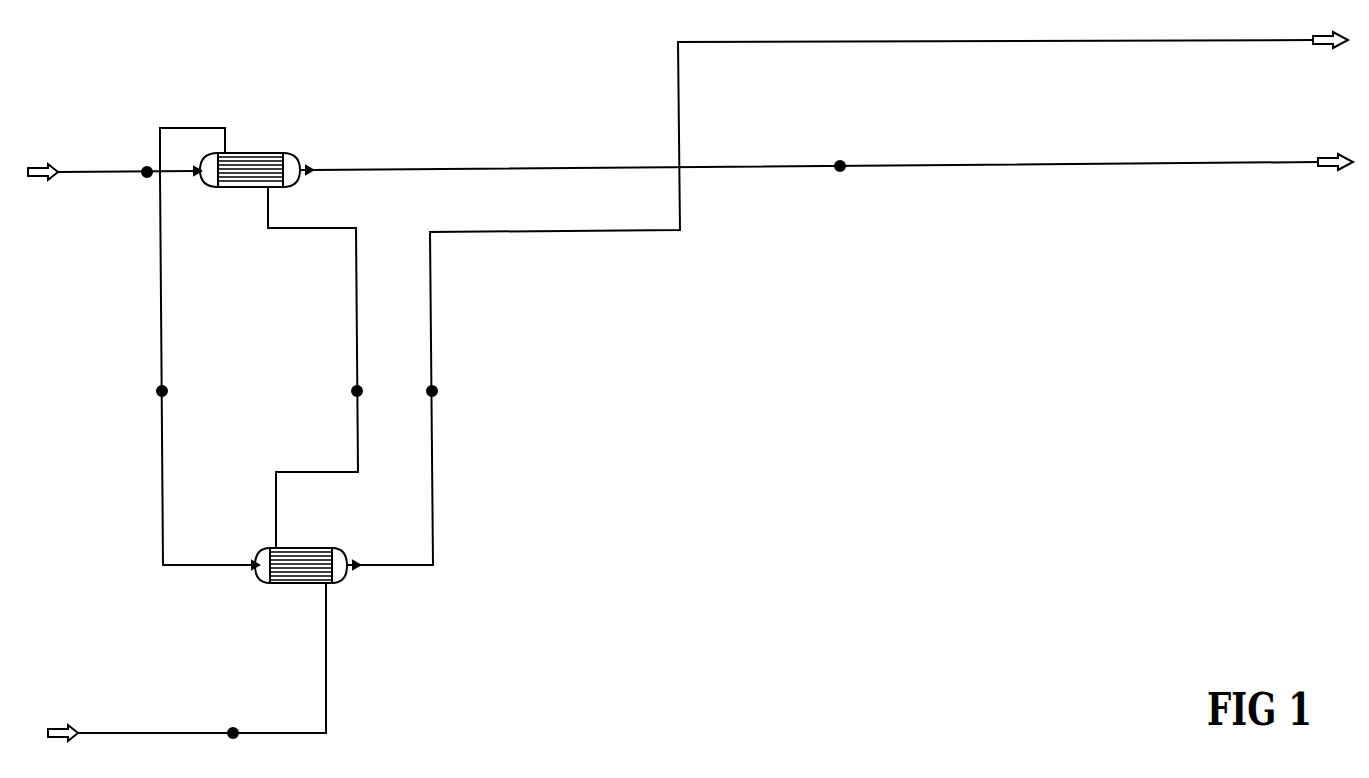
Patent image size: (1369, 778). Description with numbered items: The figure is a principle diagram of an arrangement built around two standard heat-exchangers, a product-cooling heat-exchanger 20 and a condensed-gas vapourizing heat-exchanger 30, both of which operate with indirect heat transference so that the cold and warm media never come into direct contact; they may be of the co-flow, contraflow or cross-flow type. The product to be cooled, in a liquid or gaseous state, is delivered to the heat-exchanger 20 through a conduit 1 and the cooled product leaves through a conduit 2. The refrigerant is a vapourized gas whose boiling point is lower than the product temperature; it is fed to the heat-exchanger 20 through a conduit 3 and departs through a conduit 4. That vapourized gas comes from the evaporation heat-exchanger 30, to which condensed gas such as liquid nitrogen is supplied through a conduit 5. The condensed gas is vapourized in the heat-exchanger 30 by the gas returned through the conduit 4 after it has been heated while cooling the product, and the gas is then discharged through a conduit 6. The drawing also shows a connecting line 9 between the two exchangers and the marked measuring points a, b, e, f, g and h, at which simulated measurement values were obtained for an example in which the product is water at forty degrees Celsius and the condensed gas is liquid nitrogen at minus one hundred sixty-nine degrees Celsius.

The conduit 1 is at (135, 172).
The conduit 2 is at (486, 166).
The conduit 3 is at (357, 292).
The conduit 4 is at (163, 292).
The conduit 5 is at (157, 733).
The conduit 6 is at (433, 505).
The stream to second heat exchanger shell 9 is at (312, 472).
The product-cooling heat-exchanger 20 is at (287, 153).
The condensed-gas vapourizing heat-exchanger 30 is at (326, 548).
The point a is at (146, 157).
The point b is at (840, 151).
The point e is at (233, 718).
The point f is at (347, 374).
The point g is at (150, 375).
The point h is at (419, 374).